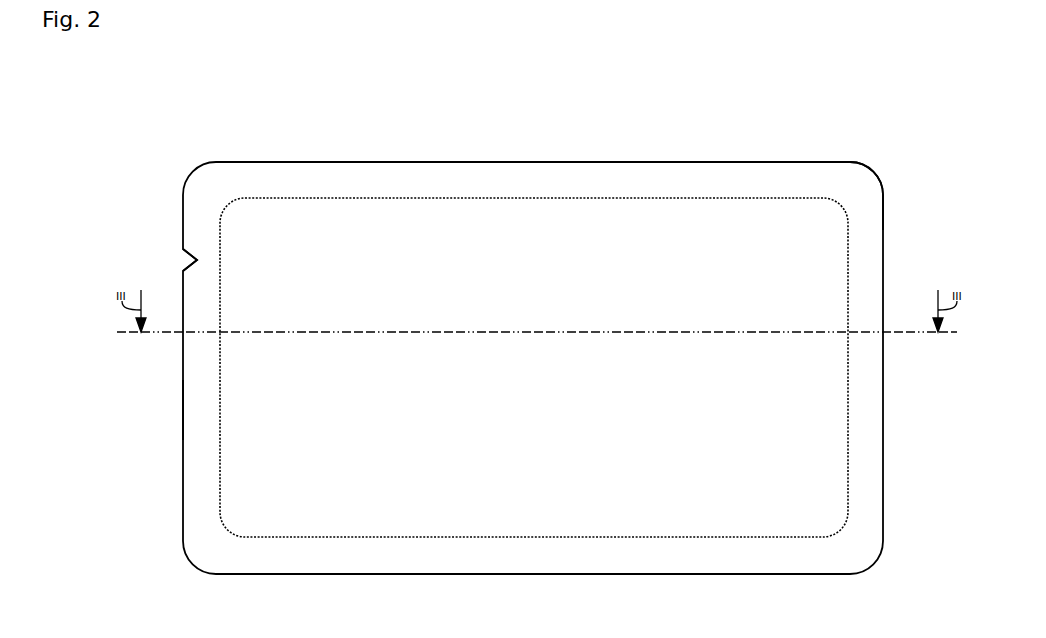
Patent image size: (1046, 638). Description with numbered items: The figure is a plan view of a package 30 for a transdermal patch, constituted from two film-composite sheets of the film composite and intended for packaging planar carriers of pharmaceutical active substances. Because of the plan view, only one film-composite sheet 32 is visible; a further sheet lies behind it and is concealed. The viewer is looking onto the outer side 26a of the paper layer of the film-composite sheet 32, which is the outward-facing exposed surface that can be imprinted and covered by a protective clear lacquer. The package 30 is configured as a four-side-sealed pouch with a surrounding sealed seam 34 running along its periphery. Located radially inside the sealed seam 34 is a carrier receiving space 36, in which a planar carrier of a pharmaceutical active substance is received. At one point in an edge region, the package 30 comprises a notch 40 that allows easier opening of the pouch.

The package 30 is at (166, 141).
The film-composite sheet 32 is at (462, 160).
The outer side of paper layer 26a is at (340, 232).
The notch 40 is at (186, 255).
The sealed seam 34 is at (200, 411).
The carrier receiving space 36 is at (390, 448).